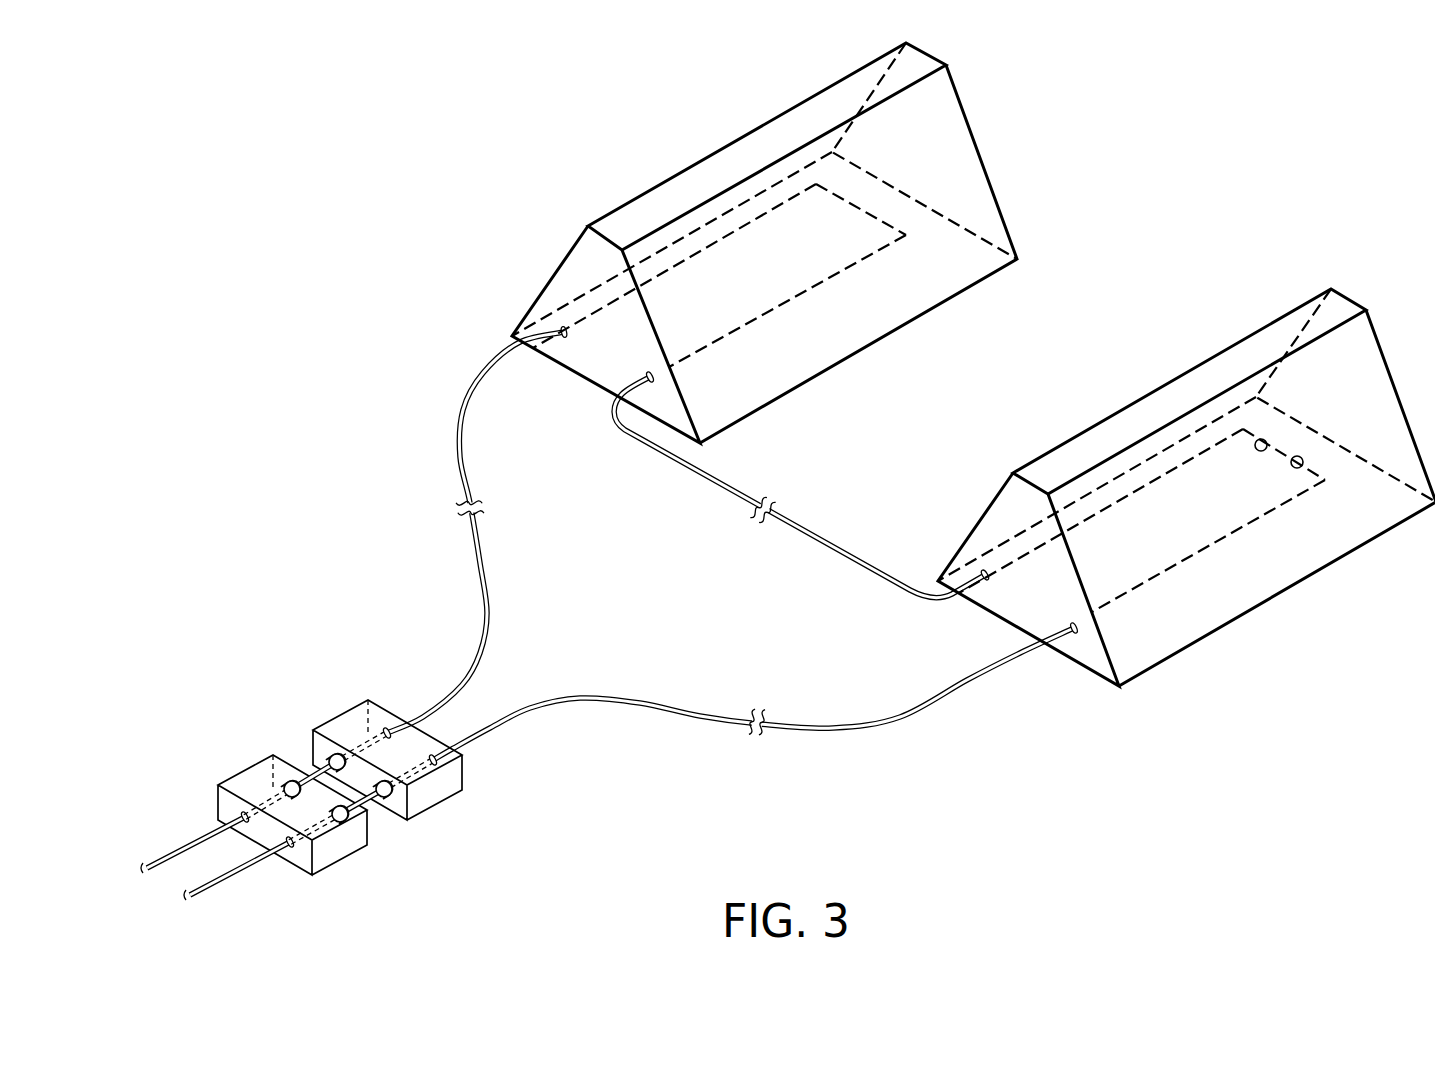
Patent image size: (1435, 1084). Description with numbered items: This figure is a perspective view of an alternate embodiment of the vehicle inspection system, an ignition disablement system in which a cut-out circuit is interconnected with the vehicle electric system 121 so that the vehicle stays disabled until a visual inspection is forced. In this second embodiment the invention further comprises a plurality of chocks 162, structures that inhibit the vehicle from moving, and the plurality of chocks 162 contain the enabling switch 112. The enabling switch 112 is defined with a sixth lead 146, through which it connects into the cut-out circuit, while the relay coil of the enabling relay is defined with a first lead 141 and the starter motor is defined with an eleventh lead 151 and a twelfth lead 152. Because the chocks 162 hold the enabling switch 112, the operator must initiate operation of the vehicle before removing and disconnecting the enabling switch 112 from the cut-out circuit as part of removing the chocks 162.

The plurality of chocks 162 is at (1275, 318).
The enabling switch 112 is at (1288, 440).
The first lead 141 is at (297, 786).
The twelfth lead 152 is at (350, 818).
The eleventh lead 151 is at (330, 763).
The sixth lead 146 is at (383, 800).
The vehicle electric system 121 is at (172, 892).